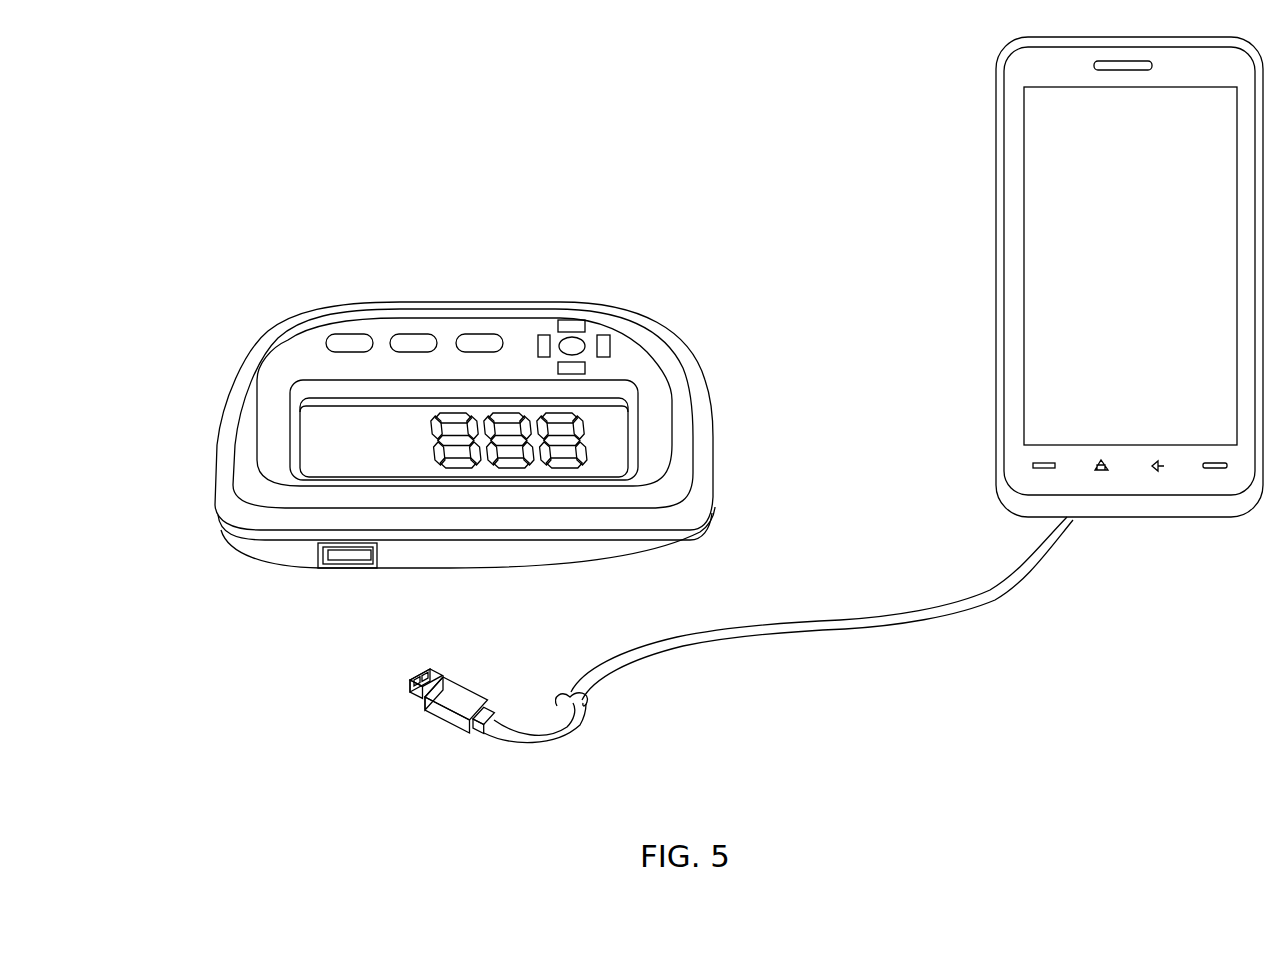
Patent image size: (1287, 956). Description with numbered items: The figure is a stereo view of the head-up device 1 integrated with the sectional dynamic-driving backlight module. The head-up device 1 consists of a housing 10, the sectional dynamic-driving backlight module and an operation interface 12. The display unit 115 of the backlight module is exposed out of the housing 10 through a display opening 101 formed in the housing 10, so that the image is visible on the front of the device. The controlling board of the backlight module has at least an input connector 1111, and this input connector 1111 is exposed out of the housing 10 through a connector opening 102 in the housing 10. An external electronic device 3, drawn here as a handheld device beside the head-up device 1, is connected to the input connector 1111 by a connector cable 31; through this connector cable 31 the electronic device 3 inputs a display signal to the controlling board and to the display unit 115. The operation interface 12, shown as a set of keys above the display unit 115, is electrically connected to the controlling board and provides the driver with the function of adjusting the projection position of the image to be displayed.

The head-up device 1 is at (240, 219).
The housing 10 is at (206, 450).
The operation interface 12 is at (573, 343).
The display unit 115 is at (338, 433).
The display opening 101 is at (630, 398).
The input connector 1111 is at (338, 553).
The connector opening 102 is at (378, 552).
The connector cable 31 is at (840, 631).
The electronic device 3 is at (1139, 314).